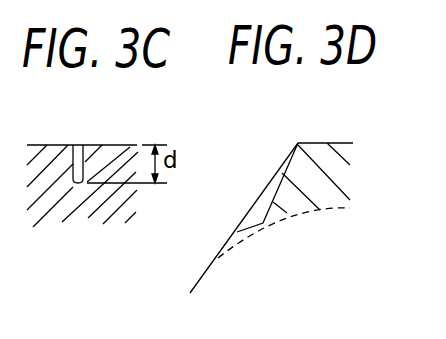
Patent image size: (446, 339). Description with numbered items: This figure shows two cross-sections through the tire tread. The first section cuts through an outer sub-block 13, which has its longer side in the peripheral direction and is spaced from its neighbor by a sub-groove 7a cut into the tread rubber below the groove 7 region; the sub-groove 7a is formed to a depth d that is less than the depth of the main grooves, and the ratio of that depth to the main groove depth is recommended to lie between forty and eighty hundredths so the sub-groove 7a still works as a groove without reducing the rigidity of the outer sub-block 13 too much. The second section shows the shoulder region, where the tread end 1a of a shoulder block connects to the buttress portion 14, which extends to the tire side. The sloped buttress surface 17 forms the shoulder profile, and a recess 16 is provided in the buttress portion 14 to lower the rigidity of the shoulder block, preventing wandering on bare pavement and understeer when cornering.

In FIG. 3C, the groove 7 is at (110, 146).
In FIG. 3C, the outer sub-block 13 is at (47, 146).
In FIG. 3C, the sub-groove 7a is at (79, 184).
In FIG. 3D, the tread end 1a is at (299, 142).
In FIG. 3D, the recess 16 is at (281, 175).
In FIG. 3D, the buttress surface 17 is at (236, 232).
In FIG. 3D, the buttress portion 14 is at (280, 262).